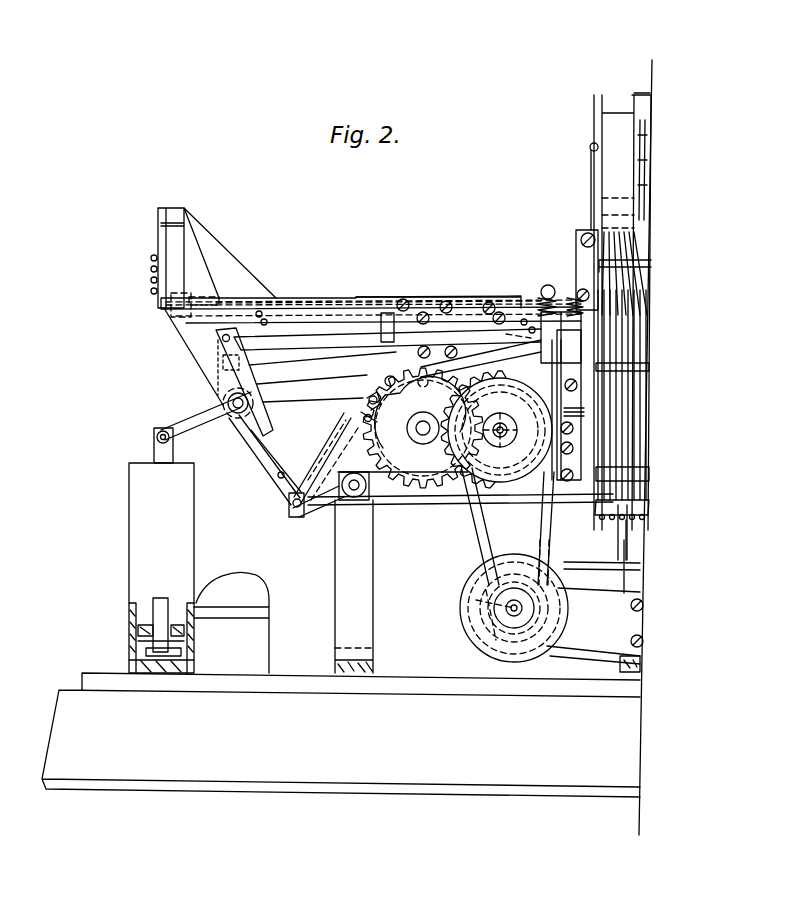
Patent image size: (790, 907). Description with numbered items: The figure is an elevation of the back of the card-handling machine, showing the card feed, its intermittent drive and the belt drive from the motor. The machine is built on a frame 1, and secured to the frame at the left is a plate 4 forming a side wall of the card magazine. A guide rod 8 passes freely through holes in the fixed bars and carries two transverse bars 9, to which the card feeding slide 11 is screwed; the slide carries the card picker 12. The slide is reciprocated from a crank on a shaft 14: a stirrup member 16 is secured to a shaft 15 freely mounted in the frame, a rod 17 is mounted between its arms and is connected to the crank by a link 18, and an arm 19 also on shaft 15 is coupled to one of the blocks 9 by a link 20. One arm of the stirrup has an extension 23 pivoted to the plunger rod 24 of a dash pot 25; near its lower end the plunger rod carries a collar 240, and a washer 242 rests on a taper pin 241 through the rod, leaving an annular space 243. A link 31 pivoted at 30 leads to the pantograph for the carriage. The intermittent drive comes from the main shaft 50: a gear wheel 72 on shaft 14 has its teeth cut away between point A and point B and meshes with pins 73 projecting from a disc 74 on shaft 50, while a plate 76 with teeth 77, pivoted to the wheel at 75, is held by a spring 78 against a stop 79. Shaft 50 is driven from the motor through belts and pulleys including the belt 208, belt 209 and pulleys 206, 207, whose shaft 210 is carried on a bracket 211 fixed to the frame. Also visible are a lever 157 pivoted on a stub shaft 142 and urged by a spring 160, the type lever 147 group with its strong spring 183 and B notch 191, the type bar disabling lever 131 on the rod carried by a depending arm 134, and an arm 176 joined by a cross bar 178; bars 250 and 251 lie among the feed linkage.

The frame 1 is at (203, 352).
The plate 4 is at (316, 297).
The guide rod 8 is at (344, 306).
The transverse bars 9 is at (378, 321).
The card feeding slide 11 is at (215, 292).
The card picker 12 is at (172, 300).
The shaft 14 is at (418, 436).
The shaft 15 is at (232, 412).
The stirrup member 16 is at (262, 452).
The rod 17 is at (276, 476).
The link 18 is at (308, 452).
The arm 19 is at (215, 376).
The link 20 is at (266, 336).
The extension 23 is at (180, 425).
The plunger rod 24 is at (158, 442).
The dash pot 25 is at (155, 523).
The pivot 30 is at (293, 512).
The link 31 is at (306, 482).
The shaft 50 is at (454, 518).
The gear wheel 72 is at (426, 490).
The pins 73 is at (510, 412).
The disc 74 is at (507, 434).
The pivot 75 is at (383, 378).
The plate 76 is at (395, 367).
The teeth 77 is at (453, 370).
The spring 78 is at (368, 435).
The stop 79 is at (373, 413).
The type bar disabling lever 131 is at (626, 512).
The depending arm 134 is at (572, 485).
The stub shaft 142 is at (343, 494).
The type levers 147 is at (640, 290).
The lever 157 is at (472, 472).
The spring 160 is at (527, 303).
The arm 176 is at (600, 518).
The cross bar 178 is at (592, 506).
The spring 183 is at (580, 305).
The B notch 191 is at (512, 470).
The pulley 206 is at (516, 646).
The pulley 207 is at (490, 620).
The belt 208 is at (466, 548).
The belt 209 is at (521, 558).
The shaft 210 is at (520, 606).
The bracket 211 is at (595, 626).
The collar 240 is at (137, 628).
The taper pin 241 is at (140, 641).
The washer 242 is at (142, 648).
The annular space 243 is at (175, 637).
The bar 250 is at (253, 383).
The bar 251 is at (333, 375).
The point A is at (347, 519).
The point B is at (488, 382).